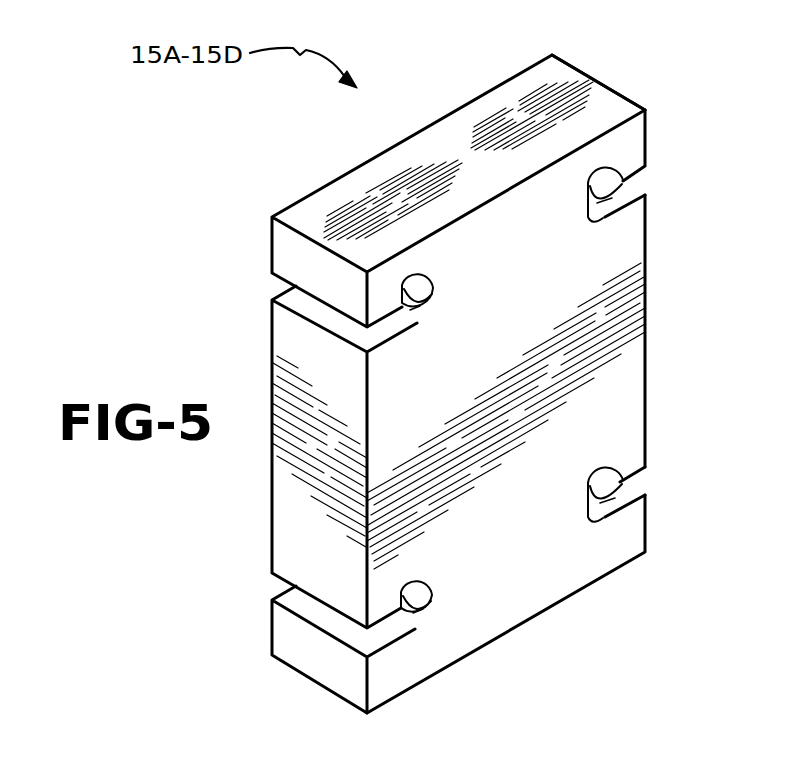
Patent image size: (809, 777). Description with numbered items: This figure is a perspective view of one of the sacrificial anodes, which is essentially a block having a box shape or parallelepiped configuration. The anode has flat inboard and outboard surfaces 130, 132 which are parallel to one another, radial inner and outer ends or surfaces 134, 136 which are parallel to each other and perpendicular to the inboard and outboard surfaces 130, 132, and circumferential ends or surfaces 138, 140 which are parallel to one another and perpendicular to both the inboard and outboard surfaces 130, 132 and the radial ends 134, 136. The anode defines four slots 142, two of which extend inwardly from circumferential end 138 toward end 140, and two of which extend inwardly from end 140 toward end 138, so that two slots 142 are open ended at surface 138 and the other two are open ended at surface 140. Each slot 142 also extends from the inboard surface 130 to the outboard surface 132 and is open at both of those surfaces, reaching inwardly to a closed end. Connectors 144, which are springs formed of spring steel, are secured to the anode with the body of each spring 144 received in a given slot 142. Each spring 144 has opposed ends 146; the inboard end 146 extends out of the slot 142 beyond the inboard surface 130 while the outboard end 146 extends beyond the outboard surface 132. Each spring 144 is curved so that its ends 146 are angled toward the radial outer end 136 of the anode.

The inboard surface 130 is at (620, 383).
The outboard surface 132 is at (458, 173).
The radial inner end 134 is at (327, 690).
The radial outer end 136 is at (407, 168).
The circumferential end 138 is at (297, 513).
The circumferential end 140 is at (605, 85).
The slot 142 is at (630, 188).
The connector 144 is at (597, 203).
The end 146 is at (430, 301).